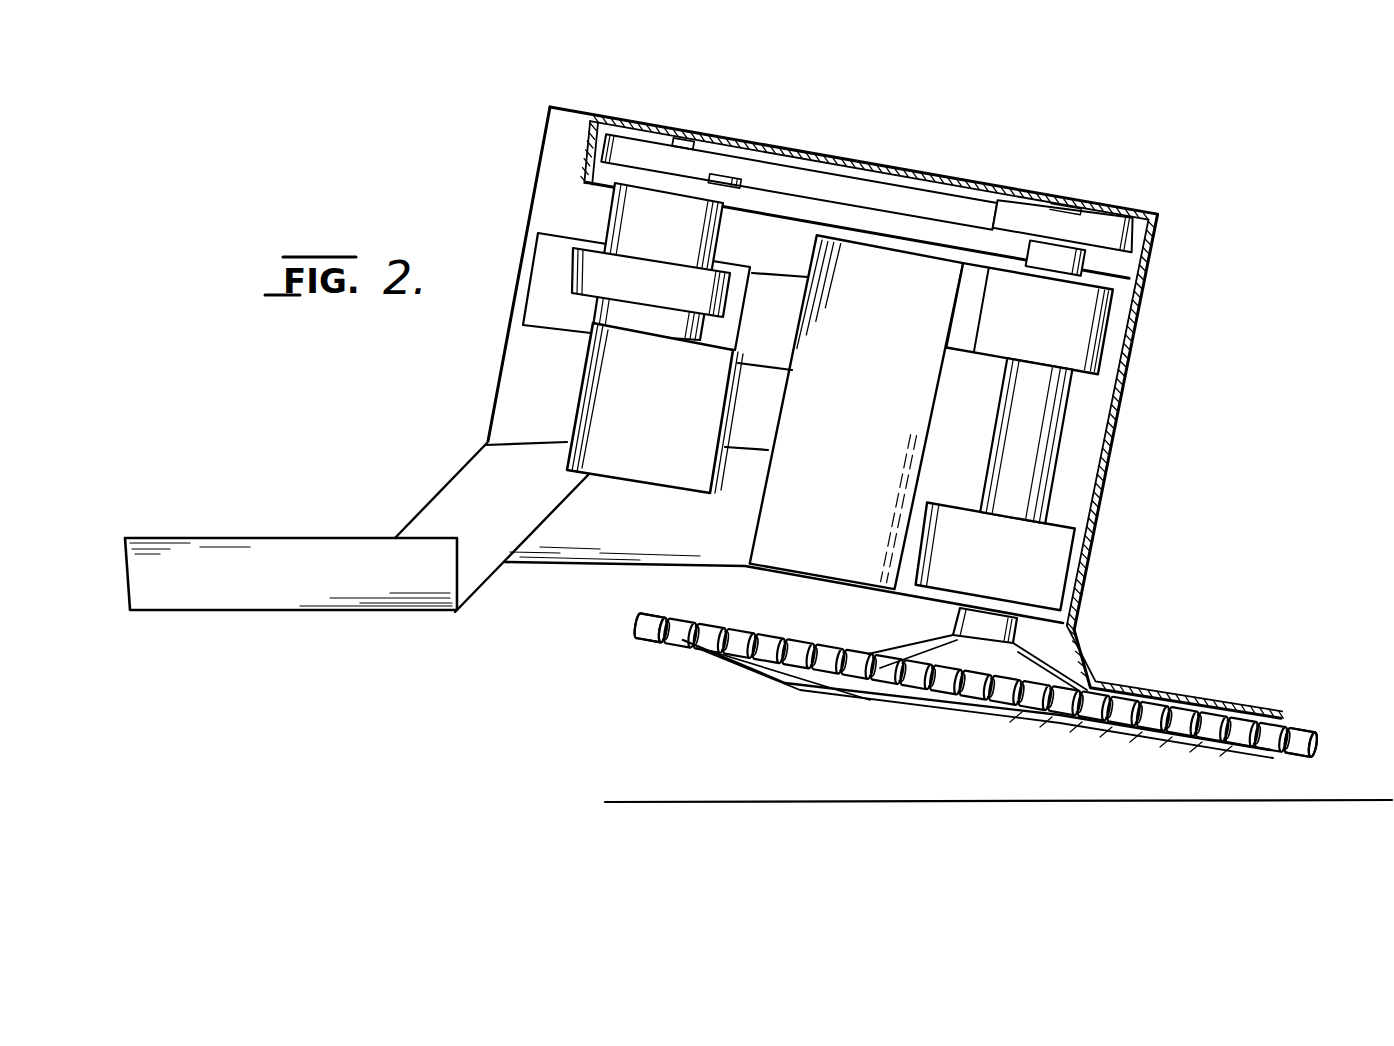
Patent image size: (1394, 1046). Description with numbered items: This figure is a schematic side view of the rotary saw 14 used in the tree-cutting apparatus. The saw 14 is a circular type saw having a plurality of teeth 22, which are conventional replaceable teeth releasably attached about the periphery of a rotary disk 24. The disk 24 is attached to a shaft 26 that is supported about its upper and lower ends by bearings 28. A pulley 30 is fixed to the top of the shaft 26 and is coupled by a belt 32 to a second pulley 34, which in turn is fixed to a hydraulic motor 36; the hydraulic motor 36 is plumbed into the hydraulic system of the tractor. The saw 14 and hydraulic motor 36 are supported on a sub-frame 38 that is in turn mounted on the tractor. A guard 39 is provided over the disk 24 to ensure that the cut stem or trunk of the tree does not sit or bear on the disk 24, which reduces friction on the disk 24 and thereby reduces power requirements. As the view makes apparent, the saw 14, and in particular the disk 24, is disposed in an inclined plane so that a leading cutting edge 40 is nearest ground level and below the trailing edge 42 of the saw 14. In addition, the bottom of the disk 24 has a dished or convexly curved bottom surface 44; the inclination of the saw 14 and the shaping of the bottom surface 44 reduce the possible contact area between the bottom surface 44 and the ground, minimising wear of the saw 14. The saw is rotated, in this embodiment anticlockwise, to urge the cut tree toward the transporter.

The rotary saw 14 is at (1204, 652).
The teeth 22 is at (673, 642).
The rotary disk 24 is at (1033, 690).
The shaft 26 is at (1018, 475).
The bearings 28 is at (1063, 339).
The pulley 30 is at (1090, 212).
The belt 32 is at (870, 197).
The second pulley 34 is at (691, 147).
The hydraulic motor 36 is at (671, 429).
The sub-frame 38 is at (290, 560).
The guard 39 is at (1082, 630).
The leading edge 40 is at (1316, 748).
The trailing edge 42 is at (637, 623).
The bottom surface 44 is at (845, 688).